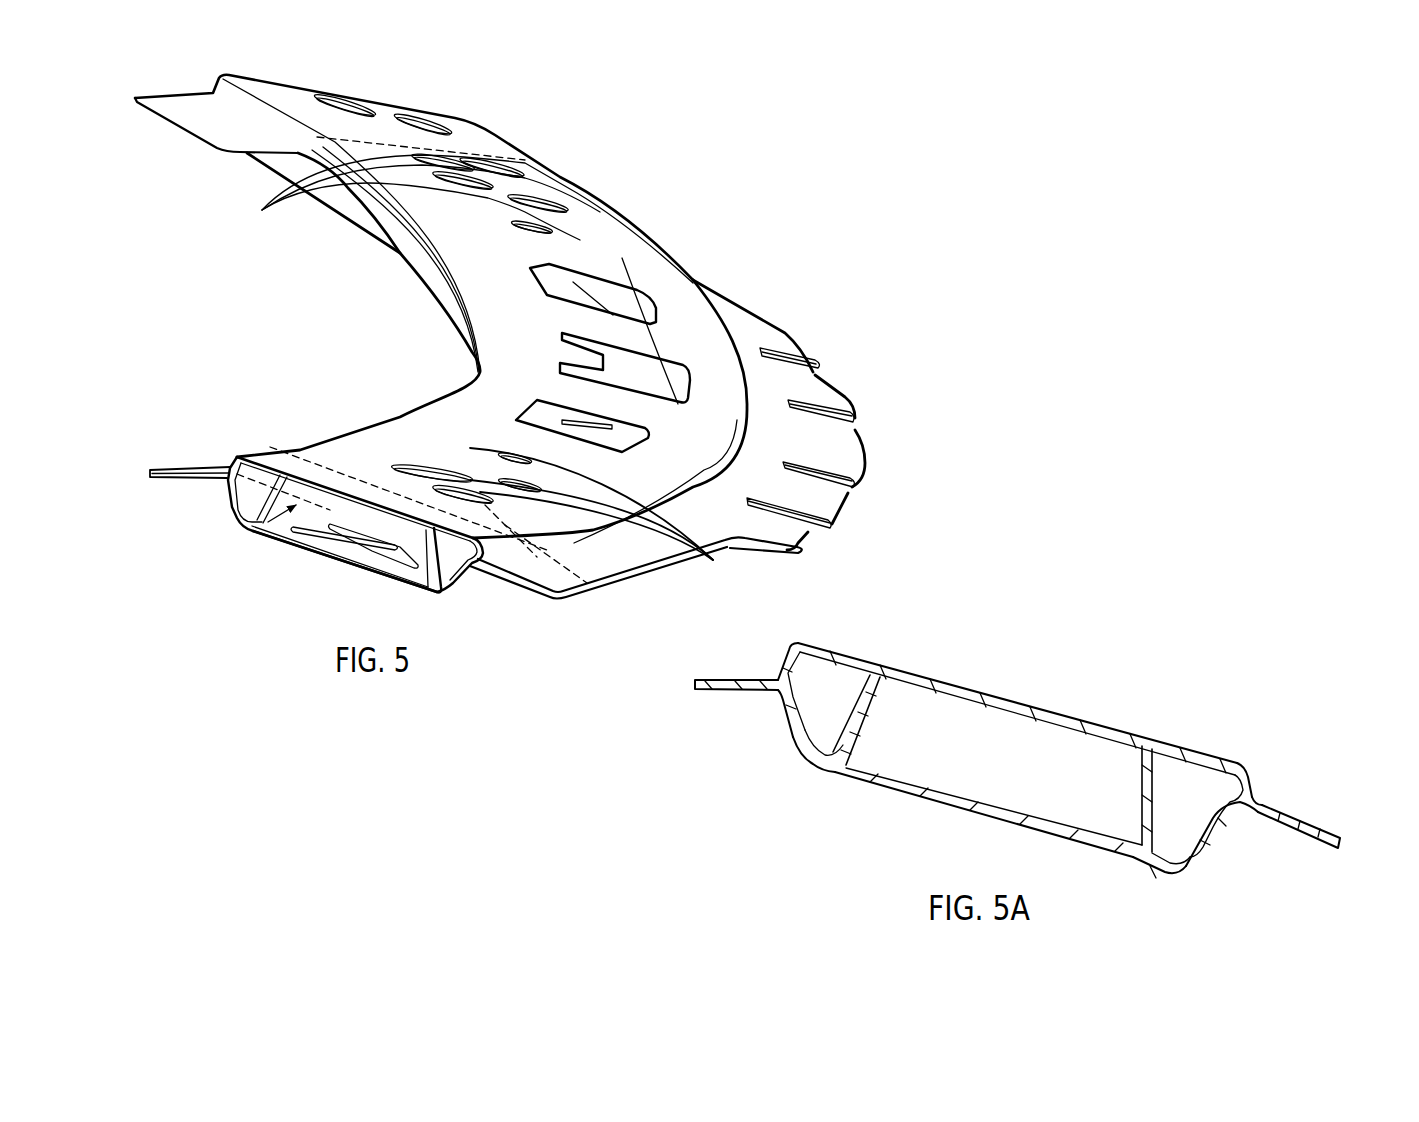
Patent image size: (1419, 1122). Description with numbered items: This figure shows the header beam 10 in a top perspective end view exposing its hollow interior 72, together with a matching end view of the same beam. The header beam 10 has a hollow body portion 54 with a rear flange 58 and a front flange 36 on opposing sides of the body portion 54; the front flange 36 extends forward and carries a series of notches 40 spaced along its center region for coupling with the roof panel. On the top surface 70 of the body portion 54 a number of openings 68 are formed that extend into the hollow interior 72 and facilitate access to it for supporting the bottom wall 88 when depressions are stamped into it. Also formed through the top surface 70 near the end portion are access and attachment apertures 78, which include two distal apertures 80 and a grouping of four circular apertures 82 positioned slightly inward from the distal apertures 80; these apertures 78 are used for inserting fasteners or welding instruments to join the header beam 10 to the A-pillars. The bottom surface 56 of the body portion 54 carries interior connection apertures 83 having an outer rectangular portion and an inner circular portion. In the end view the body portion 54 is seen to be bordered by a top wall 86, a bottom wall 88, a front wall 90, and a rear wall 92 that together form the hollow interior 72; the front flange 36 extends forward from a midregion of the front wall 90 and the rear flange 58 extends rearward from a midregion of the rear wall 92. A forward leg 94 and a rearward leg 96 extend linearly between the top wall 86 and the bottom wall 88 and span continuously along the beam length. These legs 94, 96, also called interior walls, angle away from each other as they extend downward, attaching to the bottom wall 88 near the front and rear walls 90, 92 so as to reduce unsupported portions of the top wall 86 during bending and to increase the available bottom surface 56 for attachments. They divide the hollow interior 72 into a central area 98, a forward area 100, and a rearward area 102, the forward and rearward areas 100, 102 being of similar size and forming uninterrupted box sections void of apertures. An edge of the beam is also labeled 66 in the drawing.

In FIG. 5, the header beam 10 is at (632, 148).
In FIG. 5A, the header beam 10 is at (1224, 698).
In FIG. 5, the front flange 36 is at (593, 560).
In FIG. 5A, the front flange 36 is at (1320, 837).
In FIG. 5, the notches 40 is at (820, 373).
In FIG. 5, the body portion 54 is at (523, 350).
In FIG. 5A, the bottom surface 56 is at (1073, 847).
In FIG. 5, the rear flange 58 is at (432, 198).
In FIG. 5A, the rear flange 58 is at (738, 680).
In FIG. 5, the edge 66 is at (763, 320).
In FIG. 5, the openings 68 is at (620, 297).
In FIG. 5, the top surface 70 is at (597, 250).
In FIG. 5A, the top surface 70 is at (987, 690).
In FIG. 5, the hollow interior 72 is at (270, 523).
In FIG. 5A, the hollow interior 72 is at (1072, 752).
In FIG. 5, the access and attachment apertures 78 is at (268, 206).
In FIG. 5, the distal apertures 80 is at (345, 102).
In FIG. 5, the circular apertures 82 is at (546, 205).
In FIG. 5, the interior connection apertures 83 is at (352, 545).
In FIG. 5, the top wall 86 is at (303, 453).
In FIG. 5A, the top wall 86 is at (897, 670).
In FIG. 5, the bottom wall 88 is at (297, 545).
In FIG. 5A, the bottom wall 88 is at (873, 793).
In FIG. 5, the front wall 90 is at (470, 578).
In FIG. 5A, the front wall 90 is at (1227, 822).
In FIG. 5, the rear wall 92 is at (227, 497).
In FIG. 5A, the rear wall 92 is at (780, 700).
In FIG. 5A, the forward leg 94 is at (1153, 773).
In FIG. 5A, the rearward leg 96 is at (822, 737).
In FIG. 5A, the central area 98 is at (1000, 766).
In FIG. 5A, the forward area 100 is at (1200, 810).
In FIG. 5A, the rearward area 102 is at (840, 704).